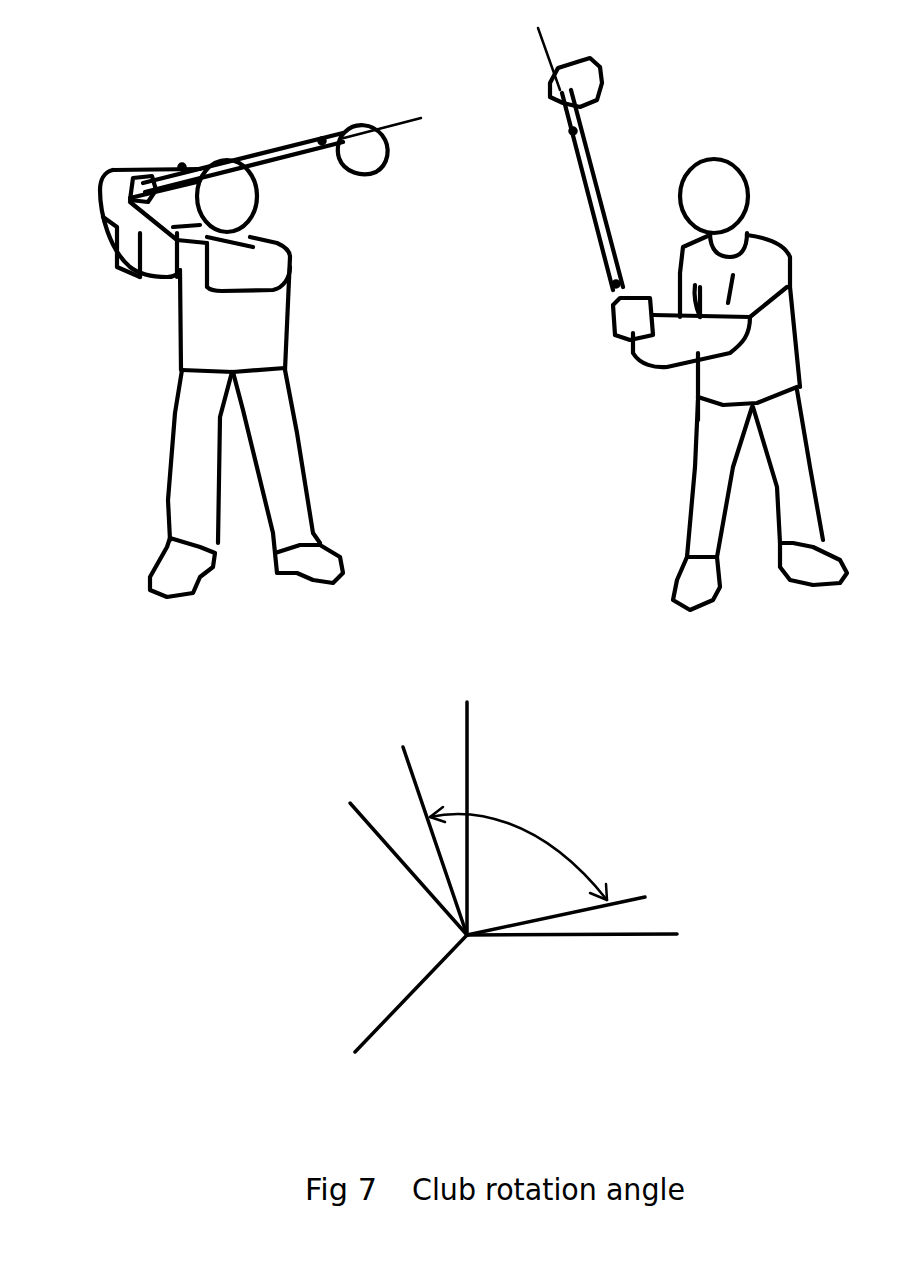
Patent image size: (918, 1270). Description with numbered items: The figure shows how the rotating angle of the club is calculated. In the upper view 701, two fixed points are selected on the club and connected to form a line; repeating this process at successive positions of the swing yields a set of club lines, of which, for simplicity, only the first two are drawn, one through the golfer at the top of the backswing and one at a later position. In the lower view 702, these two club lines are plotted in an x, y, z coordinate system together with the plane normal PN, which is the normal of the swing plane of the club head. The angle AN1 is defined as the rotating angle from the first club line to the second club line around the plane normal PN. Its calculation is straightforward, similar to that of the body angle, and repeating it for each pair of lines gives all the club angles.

The club line construction view 701 is at (160, 97).
The club rotating angle view 702 is at (230, 780).
The plane normal PN is at (390, 857).
The club rotating angle AN1 is at (537, 831).